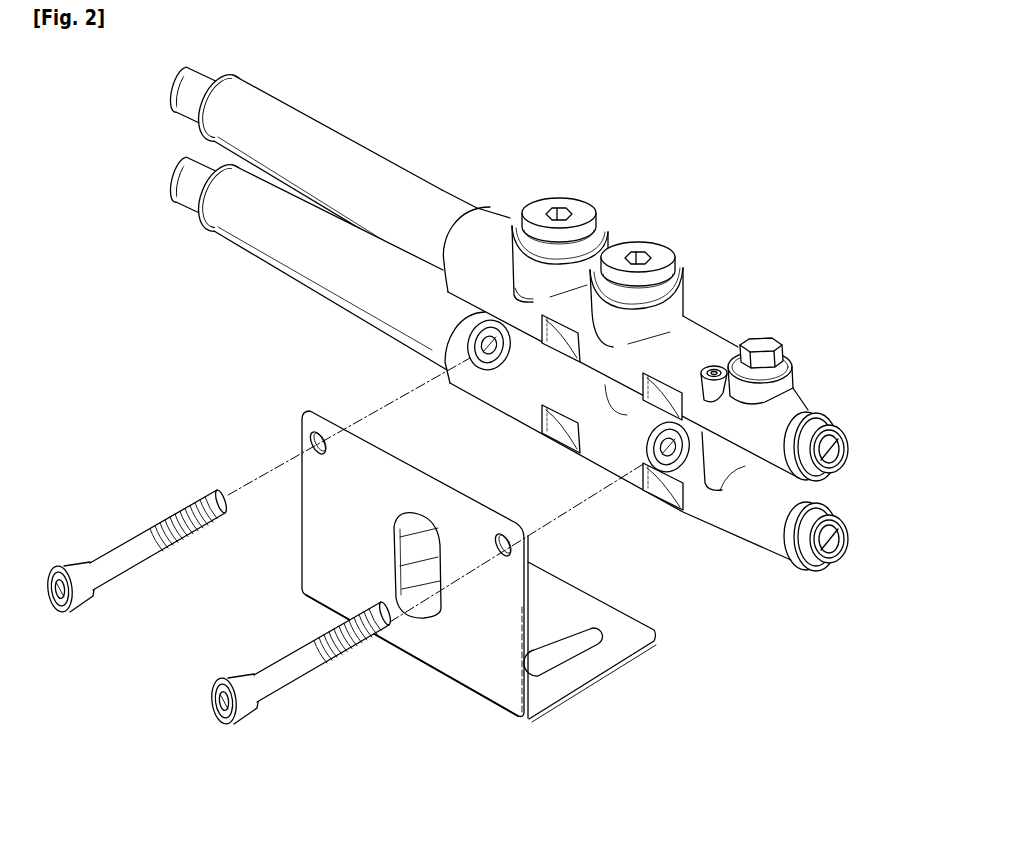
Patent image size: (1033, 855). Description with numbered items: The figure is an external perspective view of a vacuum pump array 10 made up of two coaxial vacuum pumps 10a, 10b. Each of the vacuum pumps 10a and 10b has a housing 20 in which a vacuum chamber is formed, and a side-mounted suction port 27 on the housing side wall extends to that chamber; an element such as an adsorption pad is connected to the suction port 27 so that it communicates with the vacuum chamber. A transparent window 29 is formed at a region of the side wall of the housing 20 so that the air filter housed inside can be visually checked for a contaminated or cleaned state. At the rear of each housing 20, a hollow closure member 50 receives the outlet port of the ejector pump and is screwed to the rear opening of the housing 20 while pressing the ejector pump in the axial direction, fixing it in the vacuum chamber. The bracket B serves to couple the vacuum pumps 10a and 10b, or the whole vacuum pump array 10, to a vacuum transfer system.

The vacuum pump array 10 is at (634, 353).
The vacuum pump 10a is at (730, 328).
The vacuum pump 10b is at (729, 557).
The housing 20 is at (806, 395).
The suction port 27 is at (610, 241).
The transparent window 29 is at (547, 343).
The hollow closure member 50 is at (362, 147).
The bracket B is at (467, 656).